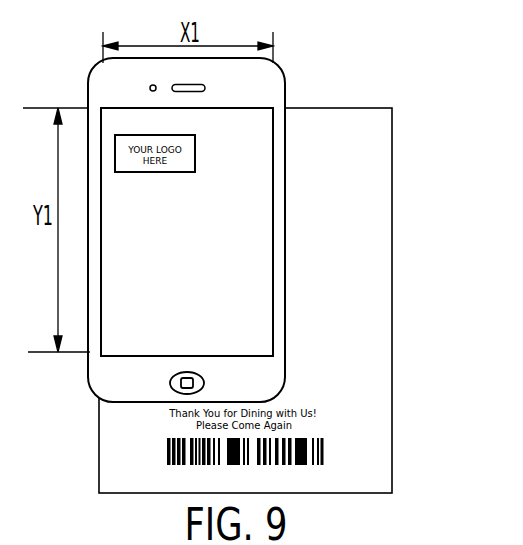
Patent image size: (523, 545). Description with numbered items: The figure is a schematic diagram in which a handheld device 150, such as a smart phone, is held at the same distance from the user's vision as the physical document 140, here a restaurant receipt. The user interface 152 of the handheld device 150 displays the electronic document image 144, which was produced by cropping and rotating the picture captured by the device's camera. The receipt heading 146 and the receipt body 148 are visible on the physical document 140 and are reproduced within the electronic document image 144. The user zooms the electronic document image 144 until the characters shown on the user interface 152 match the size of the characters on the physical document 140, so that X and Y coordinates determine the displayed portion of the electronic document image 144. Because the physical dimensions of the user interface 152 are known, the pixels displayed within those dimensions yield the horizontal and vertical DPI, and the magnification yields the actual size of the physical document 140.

The physical document 140 is at (307, 122).
The electronic document image 144 is at (263, 300).
The restaurant information header 146 is at (258, 170).
The order details section of receipt 148 is at (371, 255).
The handheld device 150 is at (92, 81).
The user interface 152 is at (110, 350).